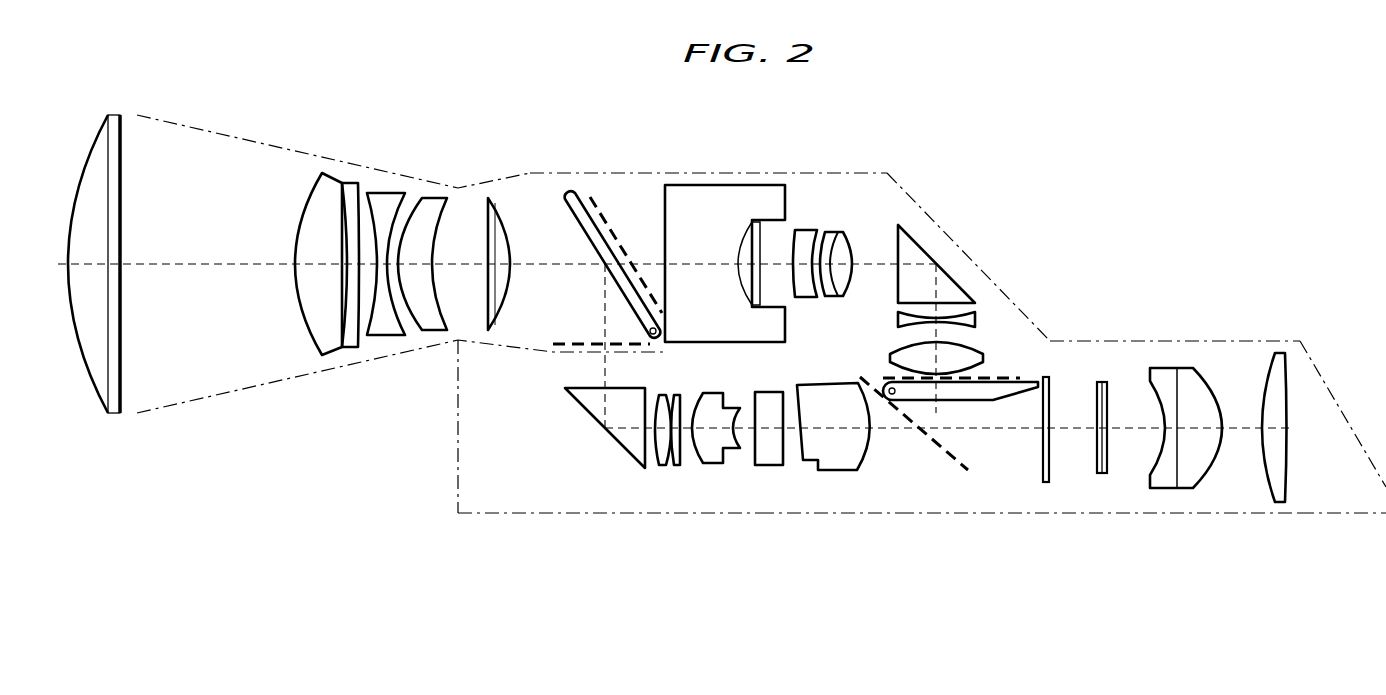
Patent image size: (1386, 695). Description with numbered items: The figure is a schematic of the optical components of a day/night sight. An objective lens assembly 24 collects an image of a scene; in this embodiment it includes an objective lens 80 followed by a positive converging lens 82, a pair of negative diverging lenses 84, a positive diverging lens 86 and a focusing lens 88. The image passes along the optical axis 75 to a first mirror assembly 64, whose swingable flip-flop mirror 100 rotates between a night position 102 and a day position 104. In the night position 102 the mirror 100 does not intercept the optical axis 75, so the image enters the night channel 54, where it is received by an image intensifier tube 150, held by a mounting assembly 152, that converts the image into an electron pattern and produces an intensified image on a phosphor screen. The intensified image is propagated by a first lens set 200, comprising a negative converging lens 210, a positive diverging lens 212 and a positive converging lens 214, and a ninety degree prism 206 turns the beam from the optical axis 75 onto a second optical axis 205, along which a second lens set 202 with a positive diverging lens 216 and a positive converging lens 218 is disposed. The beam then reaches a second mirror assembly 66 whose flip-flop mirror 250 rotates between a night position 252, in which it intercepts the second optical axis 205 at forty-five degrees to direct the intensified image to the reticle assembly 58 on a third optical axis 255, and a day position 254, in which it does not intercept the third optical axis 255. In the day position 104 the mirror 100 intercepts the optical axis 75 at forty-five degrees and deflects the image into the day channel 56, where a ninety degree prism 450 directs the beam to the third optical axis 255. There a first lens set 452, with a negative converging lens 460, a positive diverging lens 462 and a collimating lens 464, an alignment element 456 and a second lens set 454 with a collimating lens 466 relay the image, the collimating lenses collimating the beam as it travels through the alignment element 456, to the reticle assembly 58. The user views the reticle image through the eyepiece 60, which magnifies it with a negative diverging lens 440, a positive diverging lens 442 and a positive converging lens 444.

The objective lens assembly 24 is at (274, 127).
The optical axis 75 is at (167, 266).
The objective lens 80 is at (96, 362).
The positive converging lens 82 is at (300, 213).
The pair of negative diverging lenses 84 is at (343, 180).
The positive diverging lens 86 is at (430, 198).
The focusing lens 88 is at (507, 223).
The swingable or flip-flop mirror 100 is at (590, 236).
The night position 102 is at (573, 341).
The day position 104 is at (630, 263).
The first mirror assembly 64 is at (608, 185).
The mounting assembly 152 is at (693, 185).
The image intensifier tube 150 is at (683, 243).
The first lens set 200 is at (805, 184).
The night channel 54 is at (851, 185).
The negative converging lens 210 is at (802, 298).
The positive diverging lens 212 is at (828, 231).
The positive converging lens 214 is at (847, 273).
The ninety degree prism 206 is at (920, 240).
The positive diverging lens 216 is at (985, 320).
The second optical axis 205 is at (935, 332).
The second lens set 202 is at (1012, 330).
The positive converging lens 218 is at (890, 357).
The night position 252 is at (936, 443).
The swingable or flip-flop mirror 250 is at (985, 402).
The day position 254 is at (1000, 378).
The third optical axis 255 is at (1137, 427).
The reticle assembly 58 is at (1095, 460).
The negative diverging lens 440 is at (1165, 368).
The positive diverging lens 442 is at (1213, 386).
The positive converging lens 444 is at (1287, 462).
The eyepiece 60 is at (1228, 499).
The 90 degree prism 450 is at (616, 446).
The negative converging lens 460 is at (654, 462).
The positive diverging lens 462 is at (683, 400).
The collimating lens 464 is at (720, 466).
The first lens set 452 is at (683, 483).
The alignment element 456 is at (757, 392).
The collimating lens 466 is at (822, 472).
The day channel 56 is at (742, 484).
The second lens set 454 is at (842, 504).
The second mirror assembly 66 is at (939, 506).